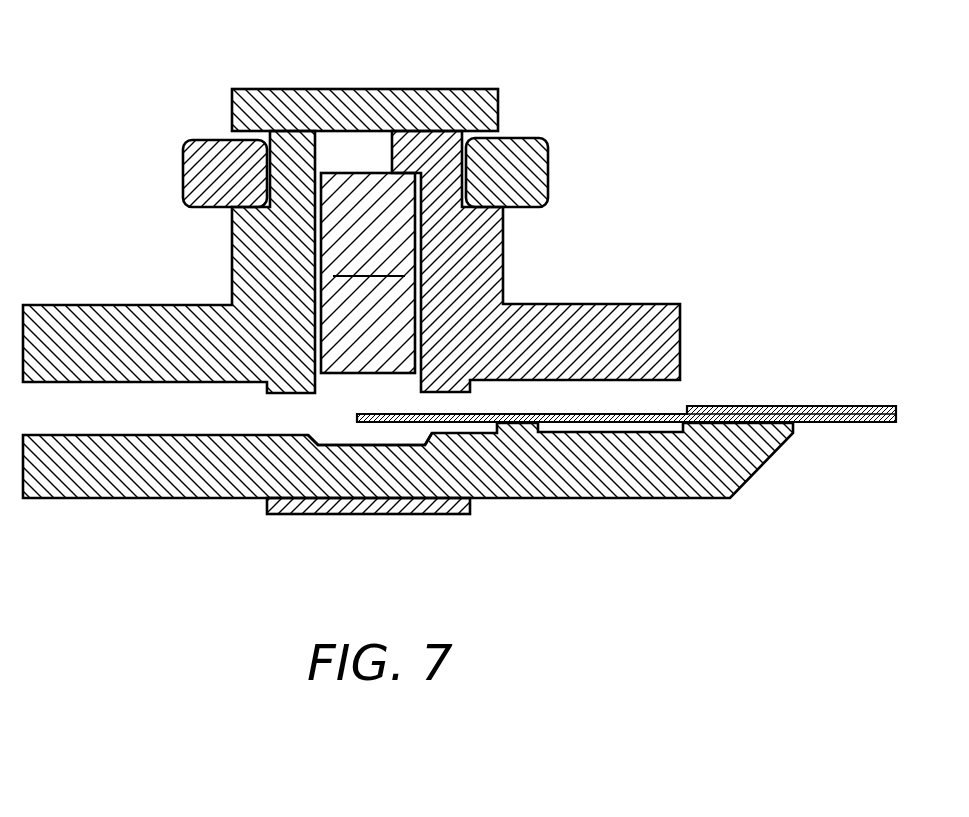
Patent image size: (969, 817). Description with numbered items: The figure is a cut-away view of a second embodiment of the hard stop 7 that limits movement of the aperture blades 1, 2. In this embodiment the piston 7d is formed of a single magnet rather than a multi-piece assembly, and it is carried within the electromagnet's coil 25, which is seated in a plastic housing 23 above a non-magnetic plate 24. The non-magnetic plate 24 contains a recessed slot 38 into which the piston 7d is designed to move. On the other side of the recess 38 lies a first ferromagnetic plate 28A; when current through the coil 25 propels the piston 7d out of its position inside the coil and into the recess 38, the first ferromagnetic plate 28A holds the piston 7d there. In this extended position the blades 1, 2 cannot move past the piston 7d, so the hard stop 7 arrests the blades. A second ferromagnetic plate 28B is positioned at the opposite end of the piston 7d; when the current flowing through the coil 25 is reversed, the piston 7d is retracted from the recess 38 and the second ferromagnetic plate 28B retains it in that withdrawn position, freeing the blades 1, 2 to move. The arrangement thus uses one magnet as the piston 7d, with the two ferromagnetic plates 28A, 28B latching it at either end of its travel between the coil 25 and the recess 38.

The aperture blade 1 is at (387, 428).
The aperture blade 2 is at (722, 405).
The hard stop 7 is at (567, 138).
The piston 7d is at (358, 360).
The plastic housing 23 is at (97, 305).
The non-magnetic plate 24 is at (88, 500).
The coil 25 is at (183, 167).
The first ferromagnetic plate 28A is at (433, 515).
The second ferromagnetic plate 28B is at (252, 88).
The recessed slot 38 is at (343, 445).